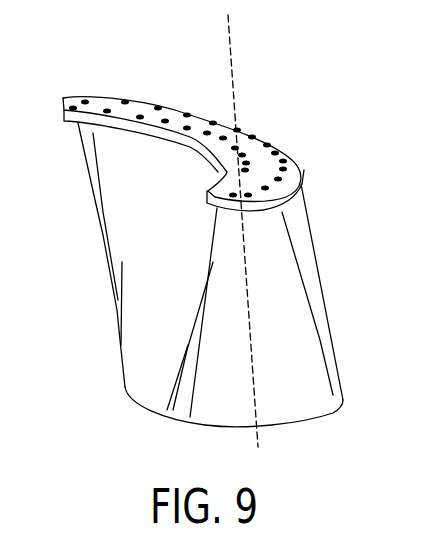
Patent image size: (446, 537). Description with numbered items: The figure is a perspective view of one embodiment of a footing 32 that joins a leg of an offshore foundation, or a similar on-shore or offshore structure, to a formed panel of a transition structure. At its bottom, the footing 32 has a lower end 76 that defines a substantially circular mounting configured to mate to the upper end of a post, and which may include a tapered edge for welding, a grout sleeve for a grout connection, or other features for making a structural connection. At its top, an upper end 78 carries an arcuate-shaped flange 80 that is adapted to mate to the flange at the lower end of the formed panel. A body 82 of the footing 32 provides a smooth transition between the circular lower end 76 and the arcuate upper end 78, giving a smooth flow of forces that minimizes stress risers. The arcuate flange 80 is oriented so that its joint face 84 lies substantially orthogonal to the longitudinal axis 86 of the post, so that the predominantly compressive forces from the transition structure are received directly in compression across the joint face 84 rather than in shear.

The footing 32 is at (326, 109).
The lower end 76 is at (312, 398).
The upper end 78 is at (112, 168).
The arcuate-shaped flange 80 is at (113, 97).
The body 82 is at (146, 239).
The joint face 84 is at (142, 112).
The longitudinal axis 86 is at (238, 53).